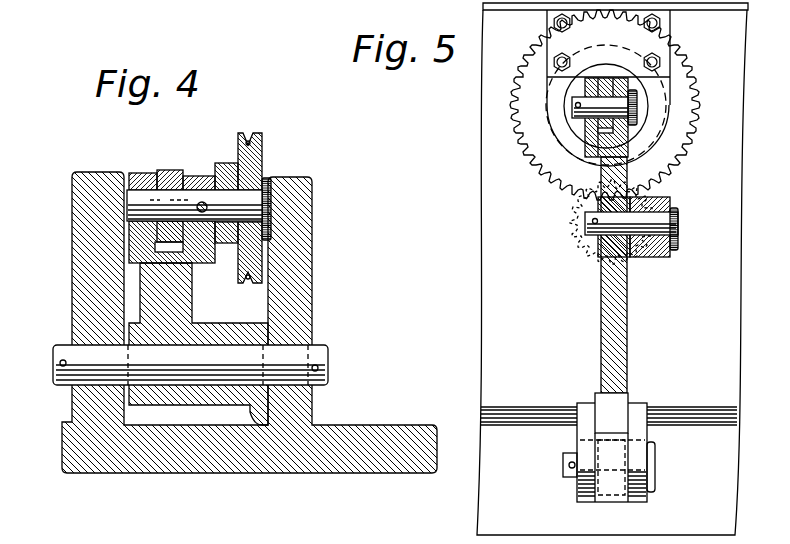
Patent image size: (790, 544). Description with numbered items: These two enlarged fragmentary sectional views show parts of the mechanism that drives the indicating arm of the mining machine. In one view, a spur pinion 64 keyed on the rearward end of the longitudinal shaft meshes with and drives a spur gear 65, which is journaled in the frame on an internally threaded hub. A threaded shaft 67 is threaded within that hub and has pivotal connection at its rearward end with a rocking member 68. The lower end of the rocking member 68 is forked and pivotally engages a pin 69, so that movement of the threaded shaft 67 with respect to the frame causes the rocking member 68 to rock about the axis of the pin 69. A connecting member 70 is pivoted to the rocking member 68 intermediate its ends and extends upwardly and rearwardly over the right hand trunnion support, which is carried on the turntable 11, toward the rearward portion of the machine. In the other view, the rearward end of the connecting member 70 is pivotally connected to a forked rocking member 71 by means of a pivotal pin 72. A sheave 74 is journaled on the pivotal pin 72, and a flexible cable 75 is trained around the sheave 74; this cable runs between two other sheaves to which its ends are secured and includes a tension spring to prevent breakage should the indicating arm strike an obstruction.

In FIG. 4, the turntable 11 is at (72, 452).
In FIG. 4, the connecting member 70 is at (173, 170).
In FIG. 5, the connecting member 70 is at (655, 257).
In FIG. 4, the forked rocking member 71 is at (143, 287).
In FIG. 4, the pivotal pin 72 is at (135, 198).
In FIG. 4, the sheave 74 is at (262, 153).
In FIG. 4, the flexible cable 75 is at (249, 143).
In FIG. 5, the spur pinion 64 is at (572, 238).
In FIG. 5, the spur gear 65 is at (547, 181).
In FIG. 5, the threaded shaft 67 is at (610, 87).
In FIG. 5, the rocking member 68 is at (607, 347).
In FIG. 5, the pin 69 is at (563, 473).